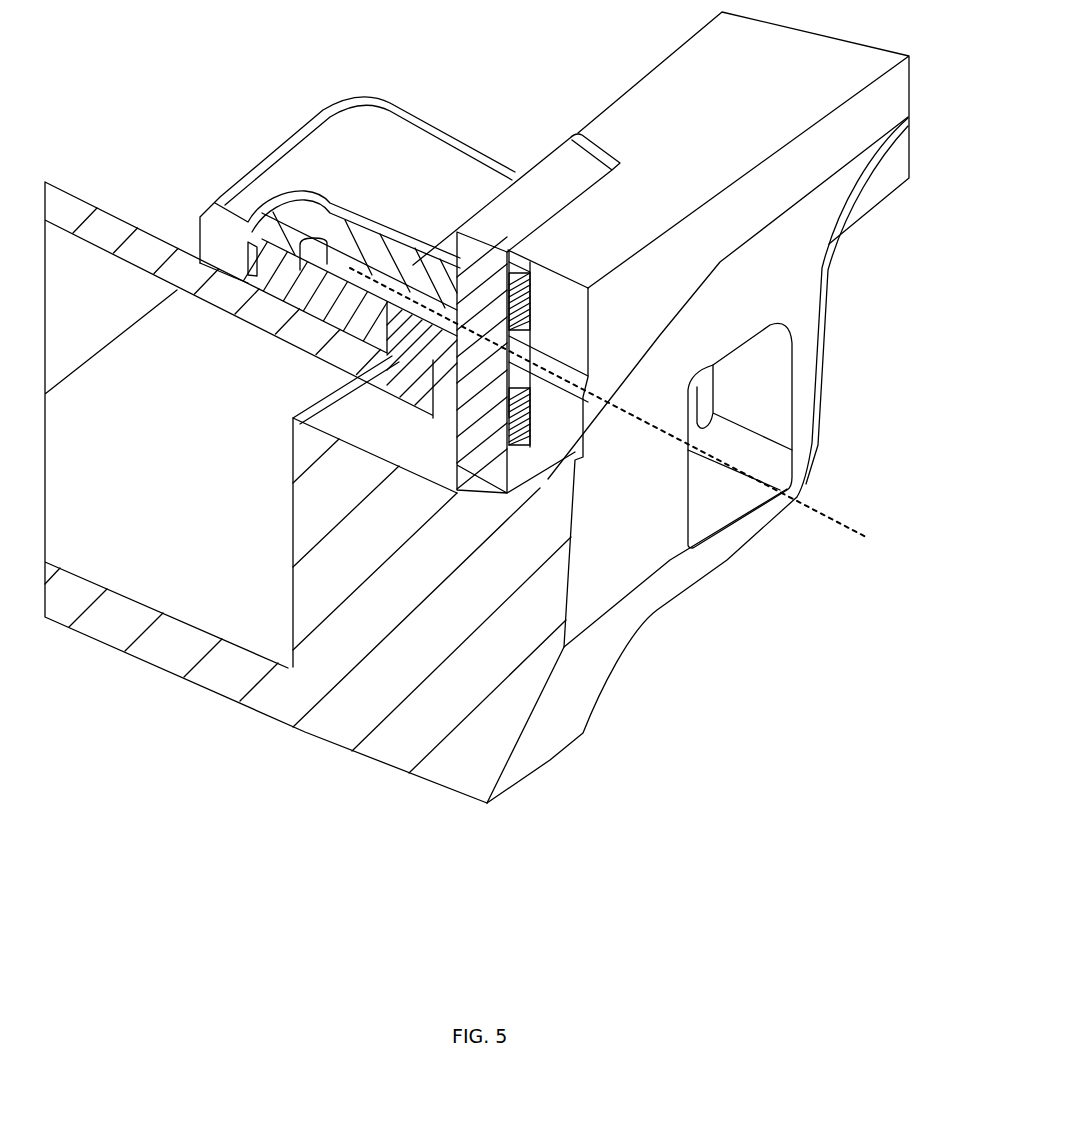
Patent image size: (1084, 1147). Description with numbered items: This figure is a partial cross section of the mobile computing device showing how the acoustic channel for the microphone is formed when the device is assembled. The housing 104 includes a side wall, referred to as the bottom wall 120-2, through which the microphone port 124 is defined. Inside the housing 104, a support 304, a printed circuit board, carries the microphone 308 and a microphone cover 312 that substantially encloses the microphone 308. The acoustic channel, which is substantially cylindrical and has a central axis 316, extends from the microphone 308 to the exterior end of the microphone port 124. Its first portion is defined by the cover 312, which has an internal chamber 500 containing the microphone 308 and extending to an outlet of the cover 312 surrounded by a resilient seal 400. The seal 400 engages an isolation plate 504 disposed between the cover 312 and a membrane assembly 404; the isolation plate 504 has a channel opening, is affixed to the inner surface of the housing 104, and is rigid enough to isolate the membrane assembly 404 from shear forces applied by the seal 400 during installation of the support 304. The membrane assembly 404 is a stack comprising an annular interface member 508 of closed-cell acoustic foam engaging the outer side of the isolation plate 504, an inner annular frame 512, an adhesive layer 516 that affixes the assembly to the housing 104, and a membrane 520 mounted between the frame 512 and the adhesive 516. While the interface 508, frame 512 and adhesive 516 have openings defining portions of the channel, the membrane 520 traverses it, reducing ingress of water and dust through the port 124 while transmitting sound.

The housing 104 is at (470, 782).
The side wall 120-2 is at (807, 280).
The microphone port 124 is at (600, 375).
The support 304 is at (80, 207).
The microphone 308 is at (258, 268).
The microphone cover 312 is at (333, 200).
The central axis 316 is at (632, 412).
The resilient seal 400 is at (450, 370).
The membrane assembly 404 is at (537, 280).
The internal chamber 500 is at (340, 262).
The isolation plate 504 is at (523, 193).
The interface member 508 is at (512, 426).
The inner annular frame 512 is at (512, 422).
The adhesive layer 516 is at (530, 303).
The membrane 520 is at (530, 373).